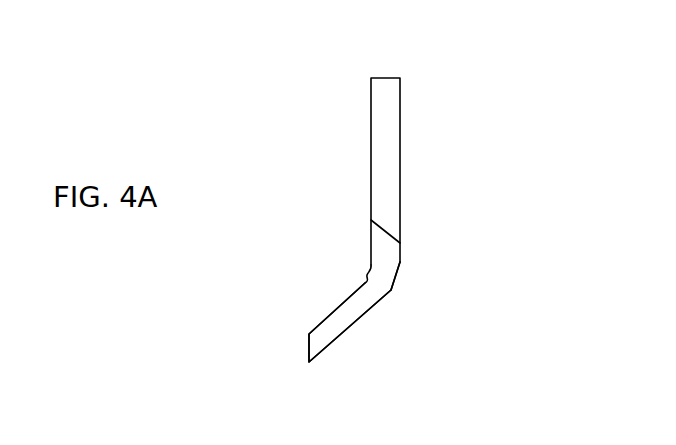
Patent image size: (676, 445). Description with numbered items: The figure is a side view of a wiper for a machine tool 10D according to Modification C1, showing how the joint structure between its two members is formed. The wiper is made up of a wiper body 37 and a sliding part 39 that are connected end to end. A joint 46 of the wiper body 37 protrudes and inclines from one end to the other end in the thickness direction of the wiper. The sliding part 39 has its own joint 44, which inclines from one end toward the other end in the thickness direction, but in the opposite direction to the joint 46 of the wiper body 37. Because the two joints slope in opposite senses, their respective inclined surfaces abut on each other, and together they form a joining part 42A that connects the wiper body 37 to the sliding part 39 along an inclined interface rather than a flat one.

The wiper for a machine tool 10D is at (407, 63).
The wiper body 37 is at (388, 173).
The joint of the sliding part 44 is at (371, 233).
The joining part 42A is at (420, 223).
The joint of the wiper body 46 is at (392, 230).
The sliding part 39 is at (352, 313).